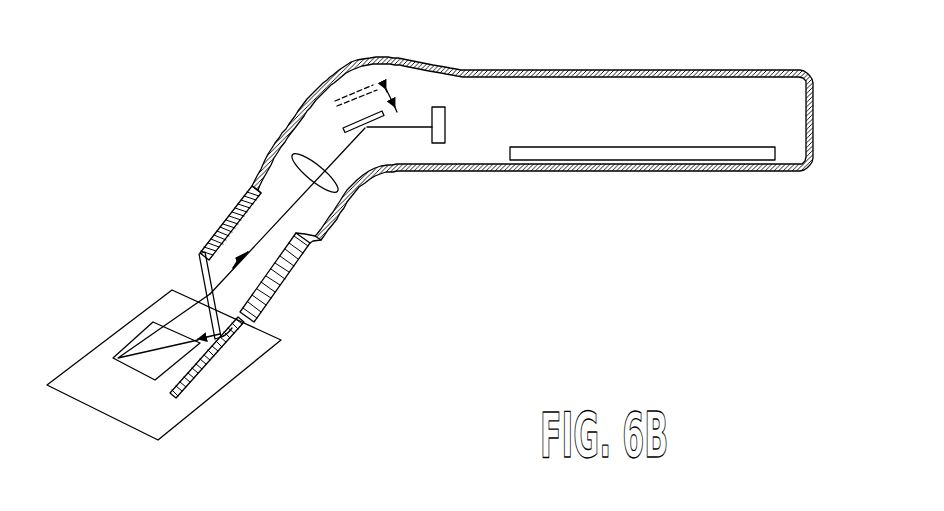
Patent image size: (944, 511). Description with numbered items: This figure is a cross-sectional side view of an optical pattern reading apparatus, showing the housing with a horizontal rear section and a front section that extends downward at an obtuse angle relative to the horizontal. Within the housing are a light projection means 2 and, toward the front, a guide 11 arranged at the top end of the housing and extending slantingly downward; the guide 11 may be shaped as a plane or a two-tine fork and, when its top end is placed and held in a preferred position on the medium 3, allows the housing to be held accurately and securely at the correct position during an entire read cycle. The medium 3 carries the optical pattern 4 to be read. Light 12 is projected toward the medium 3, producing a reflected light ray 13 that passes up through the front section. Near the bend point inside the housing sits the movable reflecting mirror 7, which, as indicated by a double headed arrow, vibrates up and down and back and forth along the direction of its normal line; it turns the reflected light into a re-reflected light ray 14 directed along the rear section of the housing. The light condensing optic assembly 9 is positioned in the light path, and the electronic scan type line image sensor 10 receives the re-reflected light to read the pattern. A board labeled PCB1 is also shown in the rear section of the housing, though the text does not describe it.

The light projection means 2 is at (237, 297).
The medium 3 is at (187, 420).
The optical pattern 4 is at (85, 348).
The movable reflecting mirror 7 is at (345, 131).
The light condensing optic assembly 9 is at (330, 190).
The electronic scan type line image sensor 10 is at (442, 143).
The guide 11 is at (193, 377).
The light 12 is at (150, 340).
The reflected light ray 13 is at (243, 238).
The re-reflected light ray 14 is at (416, 123).
The printed circuit board PCB1 is at (735, 172).